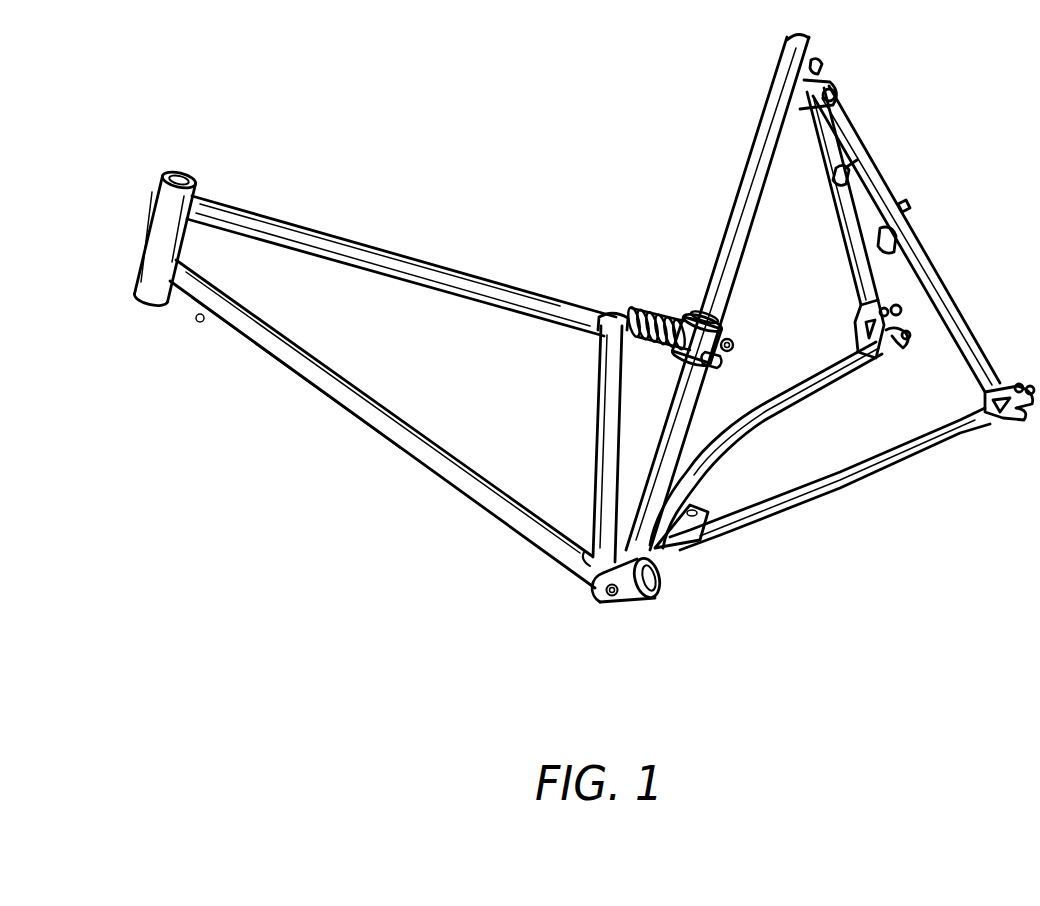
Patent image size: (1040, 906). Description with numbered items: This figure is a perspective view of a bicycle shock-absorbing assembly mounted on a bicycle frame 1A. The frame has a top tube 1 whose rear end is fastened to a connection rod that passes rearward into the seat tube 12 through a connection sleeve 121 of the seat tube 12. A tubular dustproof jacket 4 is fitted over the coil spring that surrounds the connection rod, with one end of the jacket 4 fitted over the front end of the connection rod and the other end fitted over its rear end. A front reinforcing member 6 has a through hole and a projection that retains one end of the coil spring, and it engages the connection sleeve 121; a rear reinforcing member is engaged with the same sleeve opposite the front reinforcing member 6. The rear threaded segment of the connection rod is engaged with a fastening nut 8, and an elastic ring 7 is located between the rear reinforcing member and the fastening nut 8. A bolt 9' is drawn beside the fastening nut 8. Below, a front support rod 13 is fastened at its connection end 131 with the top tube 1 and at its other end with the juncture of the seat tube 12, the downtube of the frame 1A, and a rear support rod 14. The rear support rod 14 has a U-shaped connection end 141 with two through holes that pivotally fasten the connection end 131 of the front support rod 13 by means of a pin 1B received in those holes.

The top tube 1 is at (413, 241).
The bicycle frame 1A is at (524, 92).
The pin 1B is at (611, 603).
The seat tube 12 is at (758, 166).
The front support rod 13 is at (594, 441).
The connection end 131 is at (584, 548).
The rear support rod 14 is at (760, 492).
The U-shaped connection end 141 is at (640, 590).
The dustproof jacket 4 is at (656, 312).
The front reinforcing member 6 is at (698, 318).
The connection sleeve 121 is at (713, 324).
The elastic ring 7 is at (720, 336).
The bolt 9' is at (752, 341).
The fastening nut 8 is at (714, 359).